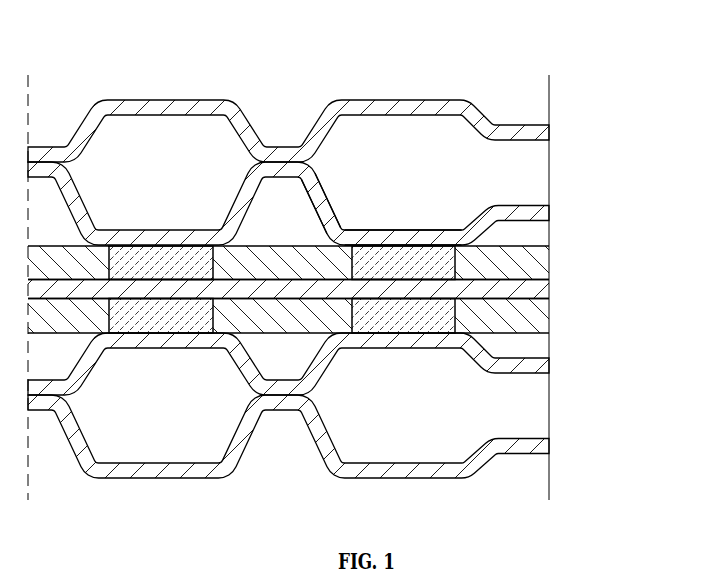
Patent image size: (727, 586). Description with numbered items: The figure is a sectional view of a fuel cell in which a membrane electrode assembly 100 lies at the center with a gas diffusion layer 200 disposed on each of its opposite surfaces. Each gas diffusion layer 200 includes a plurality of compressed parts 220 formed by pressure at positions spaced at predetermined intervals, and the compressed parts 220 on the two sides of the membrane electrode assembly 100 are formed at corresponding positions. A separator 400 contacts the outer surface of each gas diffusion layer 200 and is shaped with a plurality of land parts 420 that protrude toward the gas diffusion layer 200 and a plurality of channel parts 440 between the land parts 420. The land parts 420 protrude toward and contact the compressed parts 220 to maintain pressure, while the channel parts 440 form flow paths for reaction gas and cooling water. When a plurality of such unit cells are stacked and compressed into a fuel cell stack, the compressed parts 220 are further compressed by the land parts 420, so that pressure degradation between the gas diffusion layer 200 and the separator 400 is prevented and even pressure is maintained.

The membrane electrode assembly 100 is at (535, 292).
The gas diffusion layer 200 is at (535, 262).
The compressed part 220 is at (415, 270).
The separator 400 is at (532, 210).
The land part 420 is at (404, 240).
The channel part 440 is at (325, 192).